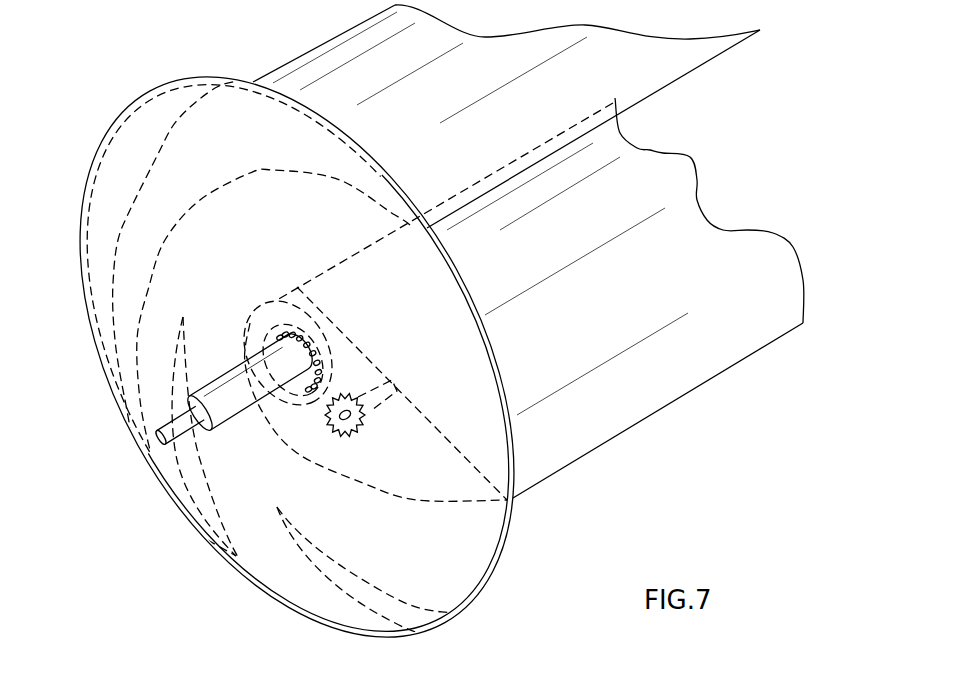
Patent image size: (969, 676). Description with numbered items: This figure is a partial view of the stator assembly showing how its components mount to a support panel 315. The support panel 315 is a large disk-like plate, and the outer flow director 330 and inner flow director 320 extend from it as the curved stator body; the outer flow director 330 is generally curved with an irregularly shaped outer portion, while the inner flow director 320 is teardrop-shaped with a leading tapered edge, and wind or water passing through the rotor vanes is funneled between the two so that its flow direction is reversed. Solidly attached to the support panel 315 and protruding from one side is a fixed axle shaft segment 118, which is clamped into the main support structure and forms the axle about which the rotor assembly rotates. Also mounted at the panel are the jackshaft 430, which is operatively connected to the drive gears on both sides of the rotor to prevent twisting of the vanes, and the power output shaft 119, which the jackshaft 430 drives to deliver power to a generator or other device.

The support panel 315 is at (160, 86).
The outer flow director 330 is at (667, 68).
The inner flow director 320 is at (705, 240).
The axle shaft segment 118 is at (262, 405).
The power output shaft 119 is at (157, 422).
The jackshaft 430 is at (372, 412).